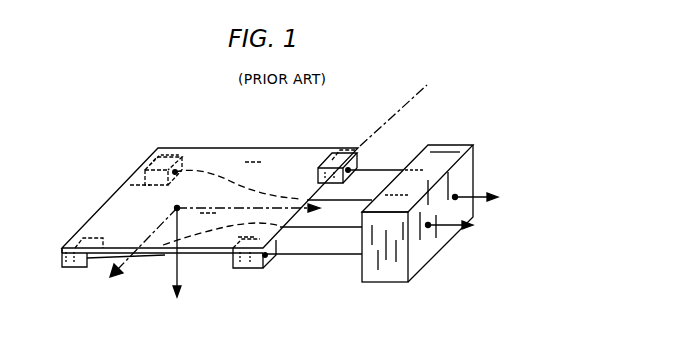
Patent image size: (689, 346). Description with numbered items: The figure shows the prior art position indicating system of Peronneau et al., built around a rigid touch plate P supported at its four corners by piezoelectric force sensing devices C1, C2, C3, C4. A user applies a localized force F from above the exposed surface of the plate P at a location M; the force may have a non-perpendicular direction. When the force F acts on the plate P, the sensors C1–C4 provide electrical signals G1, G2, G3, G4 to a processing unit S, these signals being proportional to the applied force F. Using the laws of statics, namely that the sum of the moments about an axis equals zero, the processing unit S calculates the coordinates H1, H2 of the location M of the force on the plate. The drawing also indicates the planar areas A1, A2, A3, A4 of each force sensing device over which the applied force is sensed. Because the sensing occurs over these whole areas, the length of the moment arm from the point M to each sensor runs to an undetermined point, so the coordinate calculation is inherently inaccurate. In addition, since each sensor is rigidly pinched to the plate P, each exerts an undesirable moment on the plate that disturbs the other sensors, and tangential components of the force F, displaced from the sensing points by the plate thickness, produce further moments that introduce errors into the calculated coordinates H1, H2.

The touch plate P is at (282, 148).
The planar area of first force sensing device A1 is at (335, 152).
The planar area of second force sensing device A2 is at (238, 250).
The planar area of third force sensing device A3 is at (80, 237).
The planar area of fourth force sensing device A4 is at (157, 158).
The piezoelectric sensor C1 is at (358, 160).
The piezoelectric sensor C2 is at (246, 268).
The piezoelectric sensor C3 is at (79, 265).
The piezoelectric sensor C4 is at (175, 156).
The electrical signal G1 is at (381, 170).
The electrical signal G2 is at (345, 254).
The electrical signal G3 is at (345, 227).
The electrical signal G4 is at (360, 200).
The processing unit S is at (398, 272).
The location of the localized force M is at (215, 233).
The localized force F is at (182, 255).
The first coordinate H1 is at (482, 195).
The second coordinate H2 is at (450, 227).